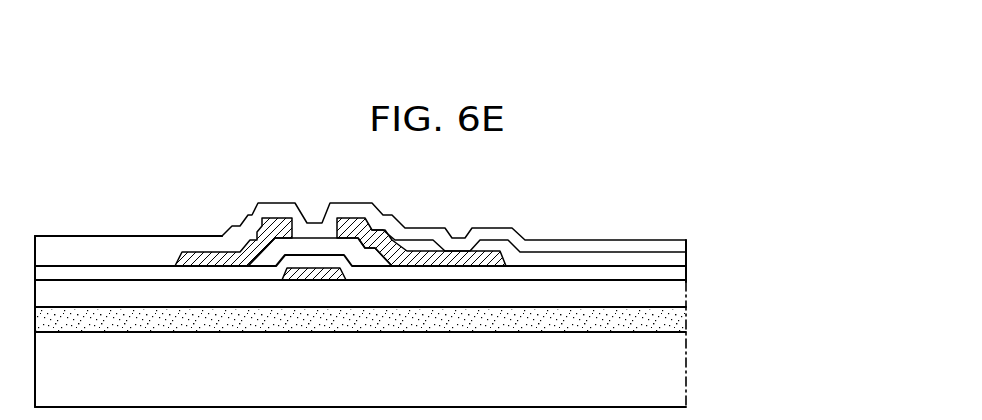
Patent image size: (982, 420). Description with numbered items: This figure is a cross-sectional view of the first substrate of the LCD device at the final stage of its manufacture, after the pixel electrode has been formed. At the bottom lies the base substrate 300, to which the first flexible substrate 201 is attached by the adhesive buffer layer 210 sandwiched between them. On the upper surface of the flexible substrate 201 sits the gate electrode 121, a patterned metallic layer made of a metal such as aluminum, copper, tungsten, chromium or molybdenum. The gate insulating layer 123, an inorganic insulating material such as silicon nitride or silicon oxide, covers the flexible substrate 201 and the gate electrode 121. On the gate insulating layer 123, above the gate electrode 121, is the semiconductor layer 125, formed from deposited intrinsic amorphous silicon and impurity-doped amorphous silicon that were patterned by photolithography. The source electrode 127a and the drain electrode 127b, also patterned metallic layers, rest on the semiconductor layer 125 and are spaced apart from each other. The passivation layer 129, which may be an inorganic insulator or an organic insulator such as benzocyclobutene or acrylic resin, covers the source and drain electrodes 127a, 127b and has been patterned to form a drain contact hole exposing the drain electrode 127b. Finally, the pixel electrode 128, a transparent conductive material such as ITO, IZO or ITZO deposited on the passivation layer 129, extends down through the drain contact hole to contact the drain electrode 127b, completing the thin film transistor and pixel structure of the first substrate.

The gate electrode 121 is at (313, 272).
The gate insulating layer 123 is at (675, 274).
The semiconductor layer 125 is at (277, 251).
The source electrode 127a is at (216, 257).
The drain electrode 127b is at (455, 253).
The pixel electrode 128 is at (560, 246).
The passivation layer 129 is at (624, 263).
The first flexible substrate 201 is at (667, 288).
The adhesive buffer layer 210 is at (667, 320).
The base substrate 300 is at (660, 385).